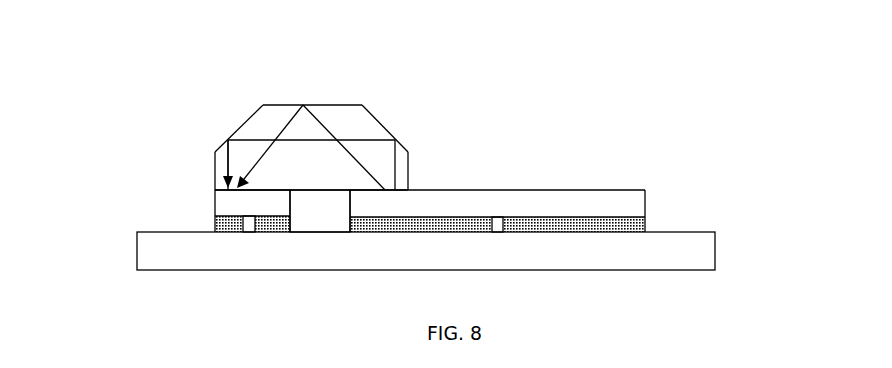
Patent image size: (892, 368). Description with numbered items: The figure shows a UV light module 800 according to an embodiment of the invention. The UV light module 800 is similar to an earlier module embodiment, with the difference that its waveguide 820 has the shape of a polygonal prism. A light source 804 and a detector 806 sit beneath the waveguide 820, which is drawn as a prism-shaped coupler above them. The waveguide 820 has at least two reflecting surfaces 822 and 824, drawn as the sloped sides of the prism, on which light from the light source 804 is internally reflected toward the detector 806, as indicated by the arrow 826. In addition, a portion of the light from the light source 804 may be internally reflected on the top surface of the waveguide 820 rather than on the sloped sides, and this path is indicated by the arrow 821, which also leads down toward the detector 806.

The UV light module 800 is at (87, 28).
The light source 804 is at (646, 203).
The detector 806 is at (215, 213).
The waveguide 820 is at (333, 105).
The arrow 821 is at (262, 157).
The reflecting surface 822 is at (398, 114).
The reflecting surface 824 is at (232, 118).
The arrow 826 is at (408, 170).